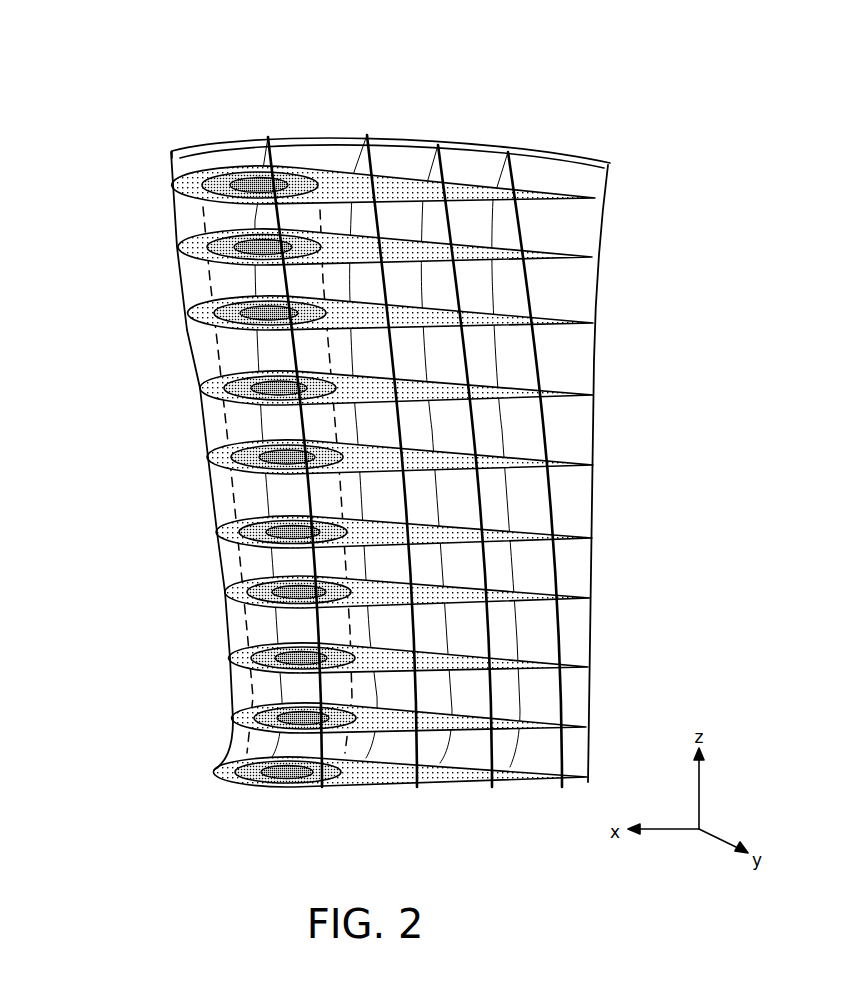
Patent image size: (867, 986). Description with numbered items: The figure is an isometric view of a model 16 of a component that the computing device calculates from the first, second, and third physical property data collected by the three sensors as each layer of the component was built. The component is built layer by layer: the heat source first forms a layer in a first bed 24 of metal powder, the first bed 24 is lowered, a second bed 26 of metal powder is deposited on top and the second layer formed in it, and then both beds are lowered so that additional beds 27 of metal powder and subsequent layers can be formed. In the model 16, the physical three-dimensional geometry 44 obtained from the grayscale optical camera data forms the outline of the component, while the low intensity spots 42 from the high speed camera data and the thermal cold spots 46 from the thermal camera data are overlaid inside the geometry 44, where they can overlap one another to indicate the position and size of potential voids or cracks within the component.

The model 16 is at (114, 90).
The first bed 24 is at (213, 772).
The second bed 26 is at (233, 722).
The additional beds 27 is at (163, 145).
The low intensity spots 42 is at (245, 173).
The physical three-dimensional geometry 44 is at (296, 137).
The thermal cold spots 46 is at (203, 172).